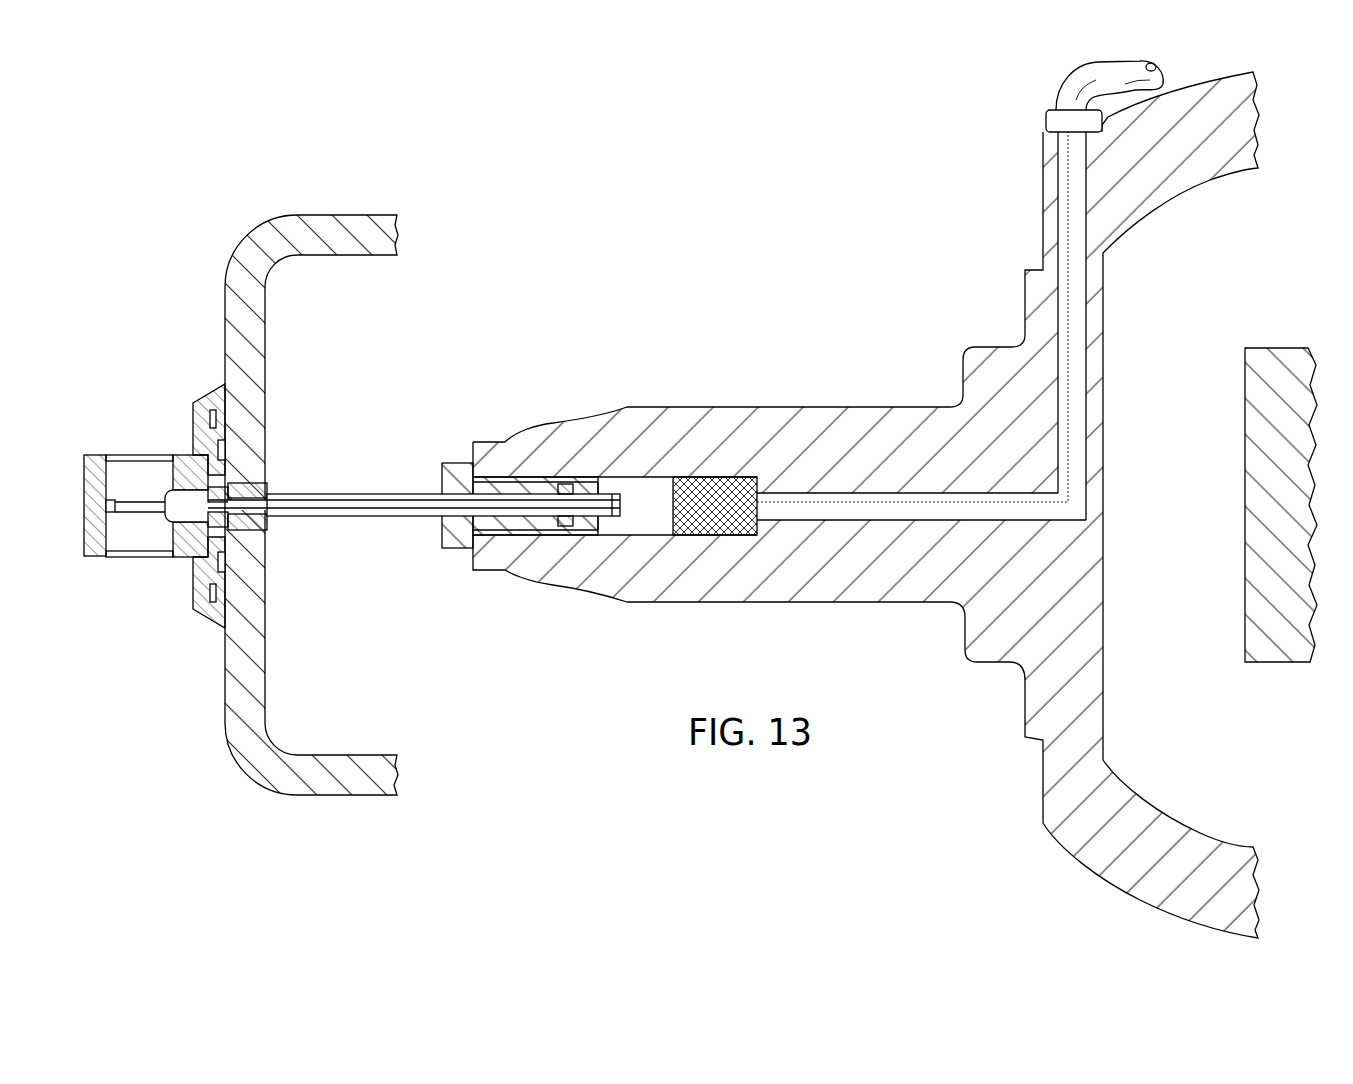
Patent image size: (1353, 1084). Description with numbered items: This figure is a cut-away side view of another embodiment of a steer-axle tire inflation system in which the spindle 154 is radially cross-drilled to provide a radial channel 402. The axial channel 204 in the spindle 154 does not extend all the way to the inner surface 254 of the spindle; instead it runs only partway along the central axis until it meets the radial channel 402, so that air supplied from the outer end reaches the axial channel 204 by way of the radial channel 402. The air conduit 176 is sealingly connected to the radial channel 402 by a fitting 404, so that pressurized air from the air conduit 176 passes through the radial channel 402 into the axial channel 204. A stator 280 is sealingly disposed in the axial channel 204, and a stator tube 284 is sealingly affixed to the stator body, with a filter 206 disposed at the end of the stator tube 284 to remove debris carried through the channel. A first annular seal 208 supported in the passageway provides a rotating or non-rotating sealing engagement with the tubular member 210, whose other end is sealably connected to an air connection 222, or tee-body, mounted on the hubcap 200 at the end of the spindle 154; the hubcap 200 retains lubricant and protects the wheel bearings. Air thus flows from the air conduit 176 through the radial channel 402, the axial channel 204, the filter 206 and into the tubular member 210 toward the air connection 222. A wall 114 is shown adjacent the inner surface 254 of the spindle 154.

The wall 114 is at (1282, 346).
The wheel spindle 154 is at (873, 405).
The air conduit 176 is at (1058, 100).
The hubcap 200 is at (340, 214).
The axial channel 204 is at (905, 500).
The filter 206 is at (716, 475).
The first annular seal 208 is at (565, 483).
The tubular member 210 is at (332, 492).
The air connection 222 is at (142, 453).
The inner surface 254 is at (1104, 590).
The stator 280 is at (436, 532).
The stator tube 284 is at (661, 478).
The radial channel 402 is at (1060, 190).
The fitting 404 is at (1046, 122).